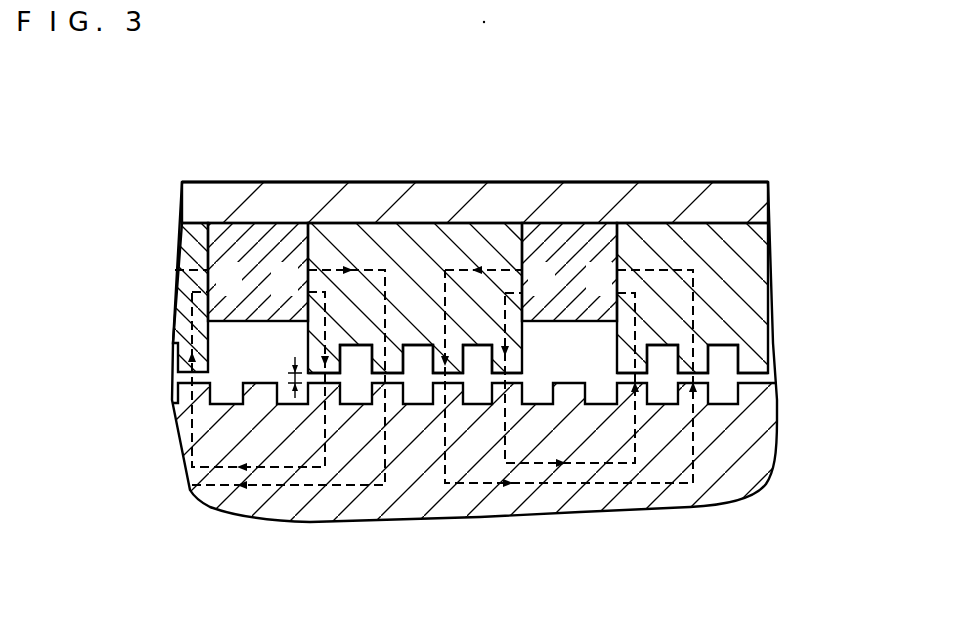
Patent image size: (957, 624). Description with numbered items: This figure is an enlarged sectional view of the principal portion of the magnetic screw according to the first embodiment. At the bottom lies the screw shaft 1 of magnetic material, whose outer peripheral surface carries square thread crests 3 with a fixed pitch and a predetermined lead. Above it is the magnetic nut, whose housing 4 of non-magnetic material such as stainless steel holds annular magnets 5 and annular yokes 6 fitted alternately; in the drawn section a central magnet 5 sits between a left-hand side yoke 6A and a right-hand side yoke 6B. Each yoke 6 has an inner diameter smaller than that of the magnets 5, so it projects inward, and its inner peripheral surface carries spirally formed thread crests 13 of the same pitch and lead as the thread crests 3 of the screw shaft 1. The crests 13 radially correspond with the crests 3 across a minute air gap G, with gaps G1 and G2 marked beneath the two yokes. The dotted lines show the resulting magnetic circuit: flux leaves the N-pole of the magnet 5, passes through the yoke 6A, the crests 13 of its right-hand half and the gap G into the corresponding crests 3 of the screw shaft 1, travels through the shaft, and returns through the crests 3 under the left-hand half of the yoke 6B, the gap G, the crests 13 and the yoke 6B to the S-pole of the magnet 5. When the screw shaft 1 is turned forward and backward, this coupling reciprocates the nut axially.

The screw shaft 1 is at (525, 497).
The thread crests 3 is at (380, 390).
The housing 4 is at (490, 203).
The annular magnet 5 is at (247, 243).
The annular yoke 6 is at (182, 248).
The left-hand side yoke 6A is at (413, 240).
The right-hand side yoke 6B is at (697, 240).
The thread crests 13 is at (447, 366).
The gap G is at (292, 375).
The air gap G1 is at (500, 384).
The air gap G2 is at (682, 386).